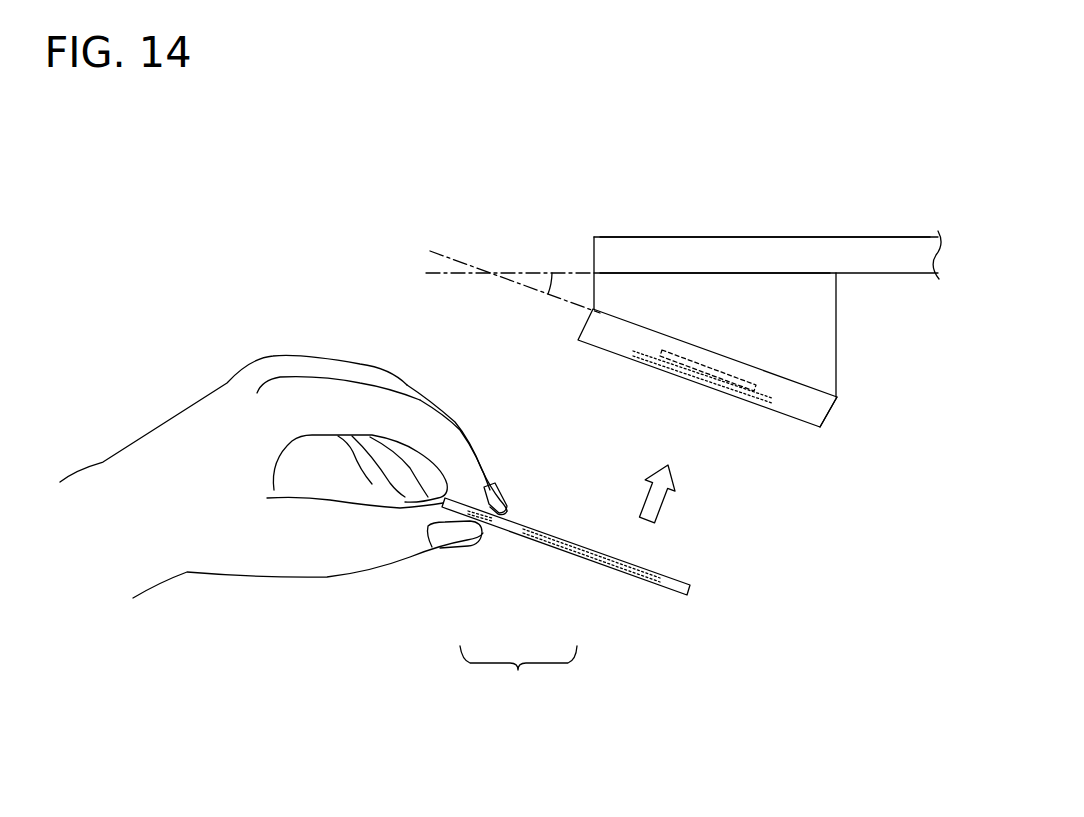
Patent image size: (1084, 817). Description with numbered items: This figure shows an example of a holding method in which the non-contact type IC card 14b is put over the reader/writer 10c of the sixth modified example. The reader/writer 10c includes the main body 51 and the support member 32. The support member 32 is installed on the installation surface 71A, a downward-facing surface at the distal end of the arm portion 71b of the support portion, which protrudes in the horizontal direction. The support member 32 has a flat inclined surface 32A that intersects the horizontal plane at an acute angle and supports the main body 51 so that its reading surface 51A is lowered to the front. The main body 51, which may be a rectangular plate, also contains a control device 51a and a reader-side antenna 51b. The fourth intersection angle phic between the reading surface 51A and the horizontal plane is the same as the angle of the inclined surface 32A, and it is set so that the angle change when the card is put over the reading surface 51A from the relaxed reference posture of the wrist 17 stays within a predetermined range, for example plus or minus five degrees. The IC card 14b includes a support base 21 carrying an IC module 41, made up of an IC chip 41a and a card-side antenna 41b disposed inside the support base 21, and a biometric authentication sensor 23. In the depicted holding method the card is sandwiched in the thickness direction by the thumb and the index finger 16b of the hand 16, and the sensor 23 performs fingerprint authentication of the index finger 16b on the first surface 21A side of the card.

The reader/writer 10c is at (892, 458).
The support member 32 is at (777, 298).
The inclined surface 32A is at (817, 393).
The arm portion 71b is at (750, 252).
The installation surface 71A is at (752, 273).
The main body 51 is at (790, 417).
The control device 51a is at (682, 368).
The antenna (reader-side antenna) 51b is at (641, 363).
The reading surface 51A is at (717, 387).
The support base 21 is at (692, 585).
The first surface 21A is at (663, 576).
The IC module 41 is at (518, 676).
The IC chip 41a is at (588, 560).
The antenna (card-side antenna) 41b is at (537, 542).
The non-contact type IC card 14b is at (670, 600).
The wrist 17 is at (103, 460).
The index finger 16 is at (477, 407).
The index finger 16b is at (495, 485).
The biometric authentication sensor 23 is at (487, 511).
The fourth intersection angle phic is at (552, 285).